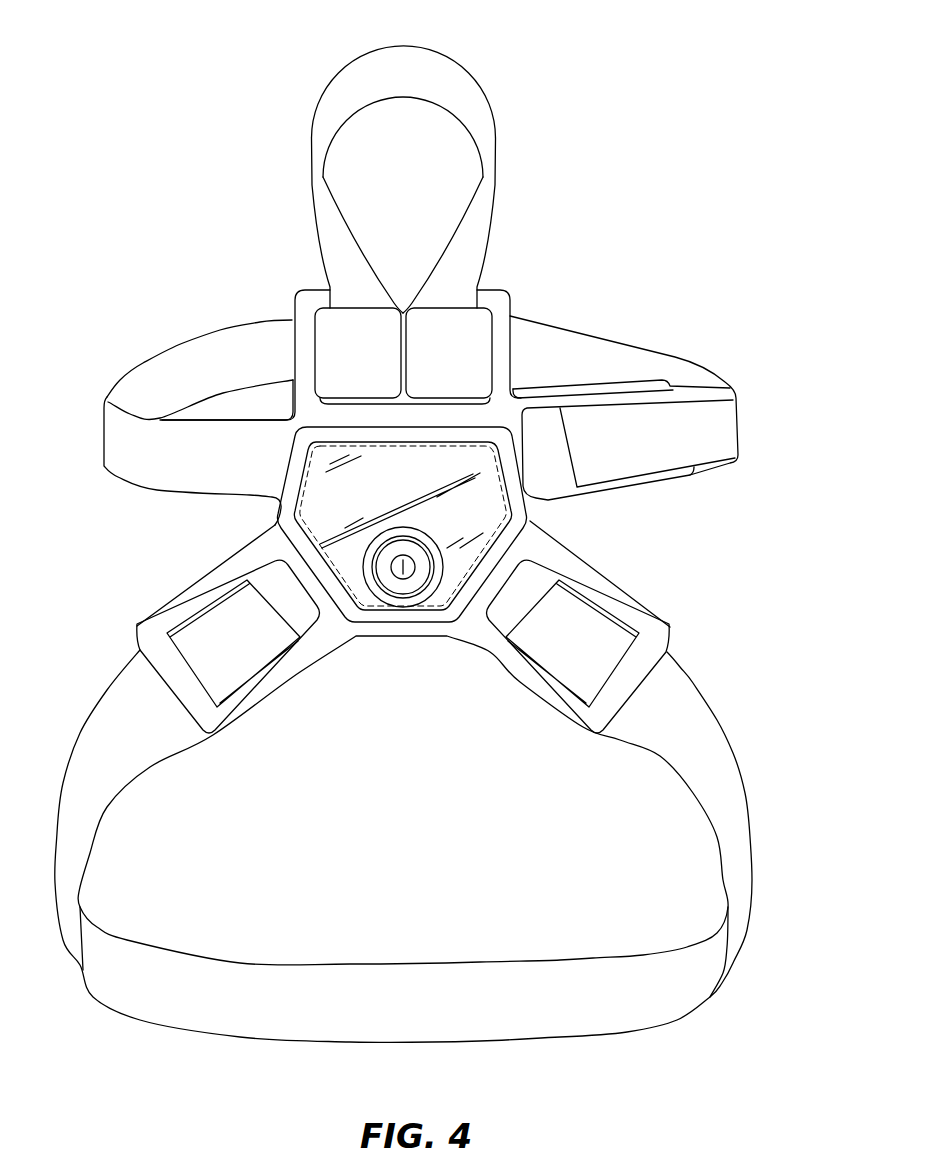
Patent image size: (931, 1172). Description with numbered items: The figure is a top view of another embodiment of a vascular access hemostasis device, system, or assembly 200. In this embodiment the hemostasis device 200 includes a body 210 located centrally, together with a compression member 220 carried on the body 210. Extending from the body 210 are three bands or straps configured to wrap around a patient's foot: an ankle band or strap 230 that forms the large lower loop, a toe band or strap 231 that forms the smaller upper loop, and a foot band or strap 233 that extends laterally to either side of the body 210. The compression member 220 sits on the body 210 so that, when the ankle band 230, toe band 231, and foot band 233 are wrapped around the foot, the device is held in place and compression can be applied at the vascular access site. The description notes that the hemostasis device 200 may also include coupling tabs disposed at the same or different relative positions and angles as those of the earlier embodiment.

The hemostasis device 200 is at (575, 167).
The body 210 is at (288, 513).
The compression member 220 is at (480, 518).
The ankle band 230 is at (733, 797).
The toe band 231 is at (483, 93).
The foot band 233 is at (653, 354).